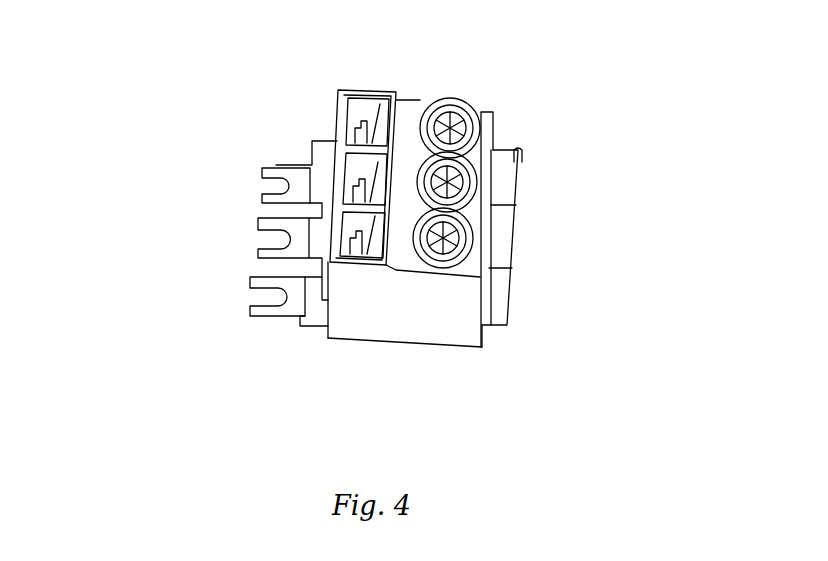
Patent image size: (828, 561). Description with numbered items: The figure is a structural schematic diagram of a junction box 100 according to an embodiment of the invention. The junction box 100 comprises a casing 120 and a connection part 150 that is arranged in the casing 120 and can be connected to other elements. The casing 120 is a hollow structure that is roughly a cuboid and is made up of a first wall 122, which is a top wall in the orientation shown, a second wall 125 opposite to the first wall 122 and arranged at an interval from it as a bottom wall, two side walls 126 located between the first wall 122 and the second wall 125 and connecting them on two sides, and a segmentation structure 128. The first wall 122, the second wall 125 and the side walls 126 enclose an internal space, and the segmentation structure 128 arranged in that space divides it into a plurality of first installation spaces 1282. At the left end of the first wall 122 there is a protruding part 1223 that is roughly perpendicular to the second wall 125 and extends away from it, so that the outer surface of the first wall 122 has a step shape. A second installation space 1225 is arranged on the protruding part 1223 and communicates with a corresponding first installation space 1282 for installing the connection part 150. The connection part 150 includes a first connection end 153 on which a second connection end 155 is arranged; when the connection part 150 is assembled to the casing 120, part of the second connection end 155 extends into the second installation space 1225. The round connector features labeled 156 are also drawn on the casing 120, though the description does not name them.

The junction box 100 is at (122, 65).
The connection part 150 is at (621, 33).
The first connection end 153 is at (276, 163).
The second connection end 155 is at (363, 133).
The round connectors 156 is at (455, 181).
The second installation space 1225 is at (360, 226).
The first installation space 1282 is at (313, 272).
The protruding part 1223 is at (367, 268).
The first wall 122 is at (398, 257).
The side wall 126 is at (432, 313).
The second wall 125 is at (482, 343).
The segmentation structure 128 is at (315, 315).
The casing 120 is at (608, 415).